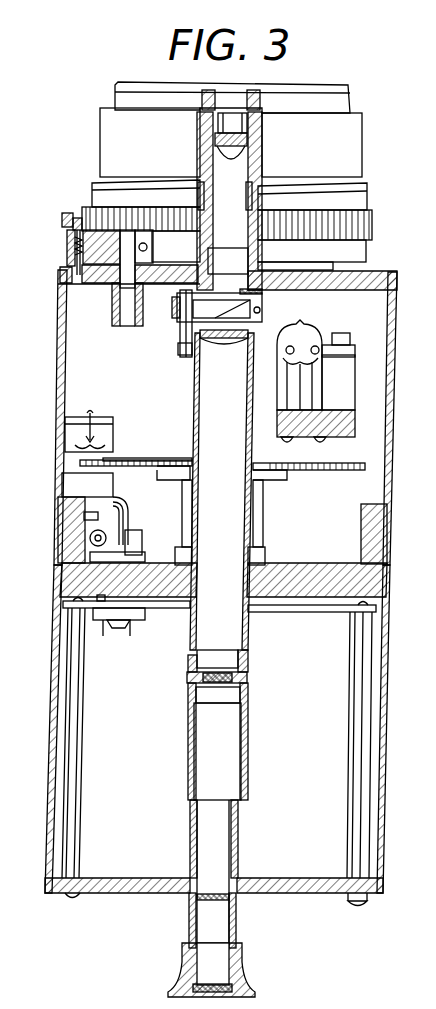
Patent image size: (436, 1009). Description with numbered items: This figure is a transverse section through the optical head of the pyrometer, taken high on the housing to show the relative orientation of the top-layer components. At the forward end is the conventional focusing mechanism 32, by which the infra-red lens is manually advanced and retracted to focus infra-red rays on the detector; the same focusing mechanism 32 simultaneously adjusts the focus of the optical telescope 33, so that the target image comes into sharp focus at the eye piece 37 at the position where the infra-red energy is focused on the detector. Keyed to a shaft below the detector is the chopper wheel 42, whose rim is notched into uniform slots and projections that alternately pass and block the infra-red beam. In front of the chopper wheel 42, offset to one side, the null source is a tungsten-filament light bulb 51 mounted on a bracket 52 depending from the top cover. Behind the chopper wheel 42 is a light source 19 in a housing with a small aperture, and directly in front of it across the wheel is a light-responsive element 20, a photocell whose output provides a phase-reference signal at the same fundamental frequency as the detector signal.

The focusing mechanism 32 is at (362, 210).
The tungsten-filament light bulb 51 is at (303, 338).
The bracket 52 is at (352, 429).
The light-responsive element 20 is at (97, 446).
The chopper wheel 42 is at (130, 460).
The light source 19 is at (87, 480).
The optical telescope 33 is at (220, 840).
The eye piece 37 is at (248, 988).